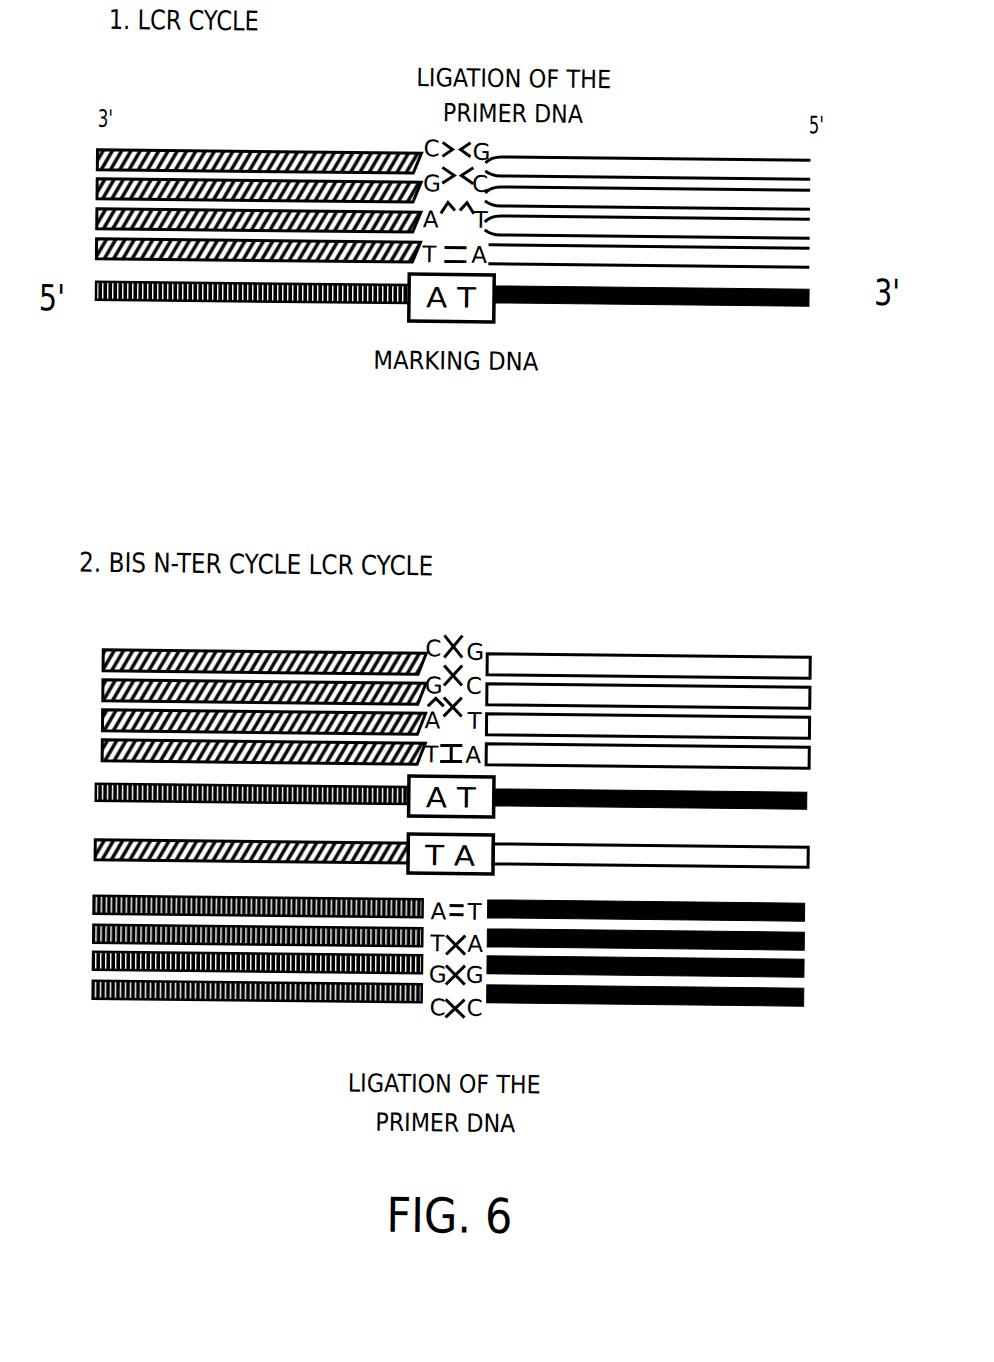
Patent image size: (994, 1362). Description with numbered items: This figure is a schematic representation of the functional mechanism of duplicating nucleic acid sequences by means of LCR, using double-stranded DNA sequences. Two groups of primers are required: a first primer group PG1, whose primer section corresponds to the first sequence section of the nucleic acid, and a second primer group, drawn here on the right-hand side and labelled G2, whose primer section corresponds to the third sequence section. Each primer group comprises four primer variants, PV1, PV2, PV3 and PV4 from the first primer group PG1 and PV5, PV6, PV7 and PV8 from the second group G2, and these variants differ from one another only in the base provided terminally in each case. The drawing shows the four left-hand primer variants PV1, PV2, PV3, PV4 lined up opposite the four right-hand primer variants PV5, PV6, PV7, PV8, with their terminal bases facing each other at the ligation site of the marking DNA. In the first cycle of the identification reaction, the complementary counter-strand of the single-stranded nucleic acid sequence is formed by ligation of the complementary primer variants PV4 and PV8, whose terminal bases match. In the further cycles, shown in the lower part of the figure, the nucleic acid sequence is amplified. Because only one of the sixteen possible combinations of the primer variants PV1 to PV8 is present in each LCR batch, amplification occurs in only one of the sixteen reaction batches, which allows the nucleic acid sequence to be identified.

The primer variant PV1 is at (229, 532).
The primer variant PV2 is at (229, 562).
The primer variant PV3 is at (229, 591).
The primer variant PV4 is at (229, 621).
The primer variant PV5 is at (683, 539).
The primer variant PV6 is at (683, 568).
The primer variant PV7 is at (683, 598).
The primer variant PV8 is at (684, 629).
The first primer group PG1 is at (296, 120).
The group G2 is at (667, 125).